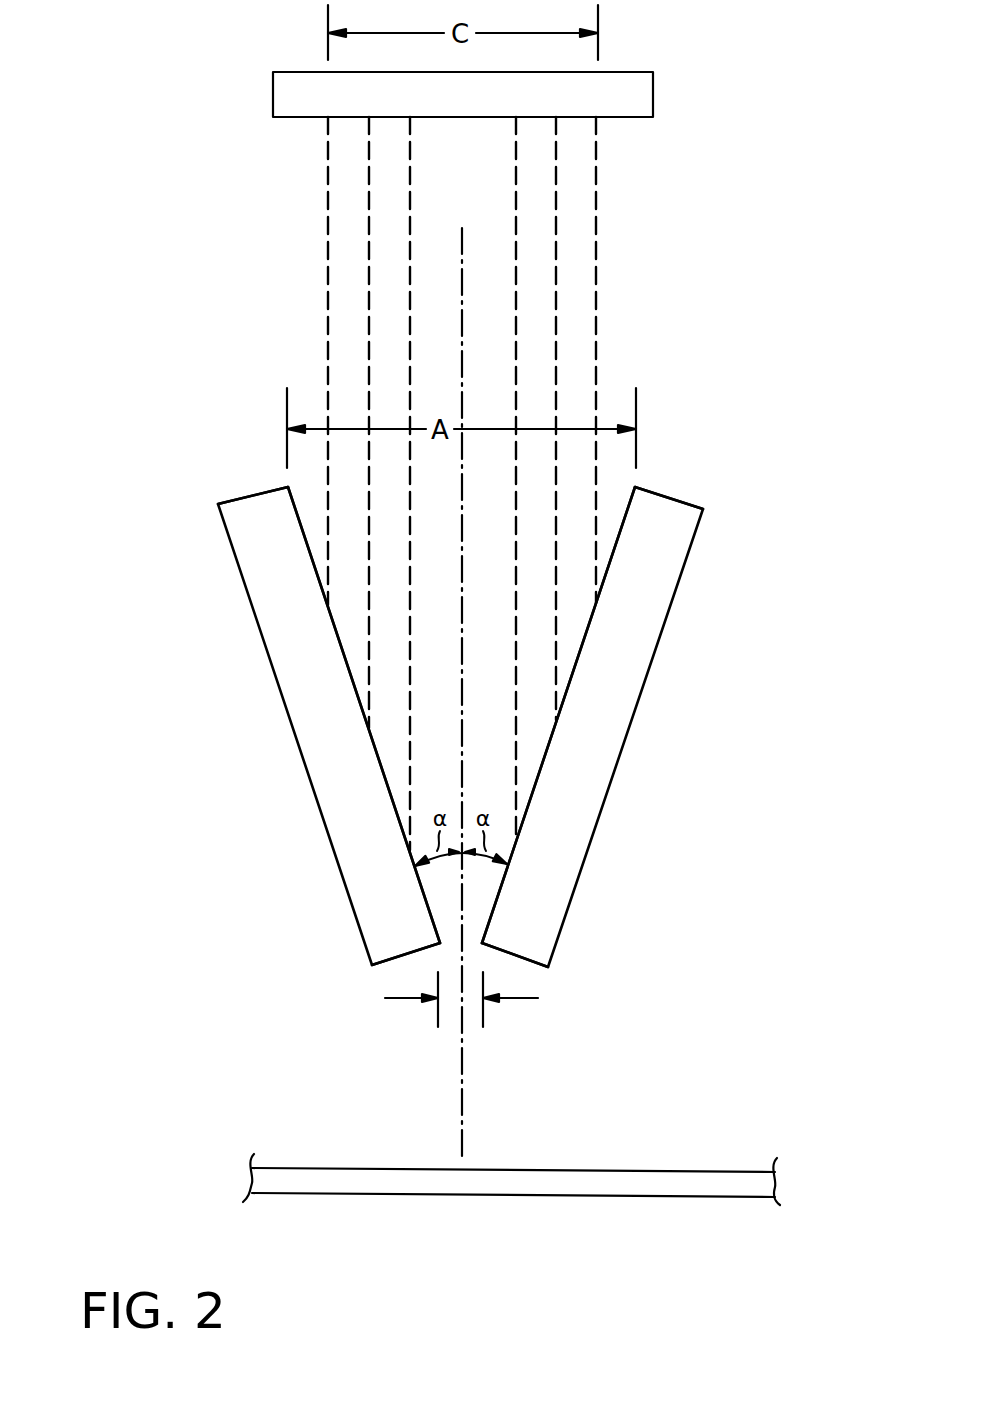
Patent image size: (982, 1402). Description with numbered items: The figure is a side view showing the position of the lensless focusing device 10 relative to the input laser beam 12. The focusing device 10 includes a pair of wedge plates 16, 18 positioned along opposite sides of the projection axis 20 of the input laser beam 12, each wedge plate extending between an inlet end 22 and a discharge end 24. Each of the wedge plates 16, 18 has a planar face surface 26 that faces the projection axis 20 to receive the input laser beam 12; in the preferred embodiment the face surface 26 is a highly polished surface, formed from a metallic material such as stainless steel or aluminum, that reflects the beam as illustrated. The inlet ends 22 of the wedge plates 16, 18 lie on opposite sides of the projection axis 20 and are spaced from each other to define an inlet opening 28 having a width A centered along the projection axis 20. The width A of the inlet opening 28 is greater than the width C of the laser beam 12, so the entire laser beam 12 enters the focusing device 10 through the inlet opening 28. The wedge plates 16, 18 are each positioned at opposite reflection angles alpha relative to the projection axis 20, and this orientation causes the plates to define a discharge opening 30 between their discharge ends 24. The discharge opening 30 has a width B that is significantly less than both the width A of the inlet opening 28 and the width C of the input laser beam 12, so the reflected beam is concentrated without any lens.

The focusing device 10 is at (644, 826).
The input laser beam 12 is at (634, 218).
The wedge plate 16 is at (690, 749).
The wedge plate 18 is at (240, 704).
The projection axis 20 is at (460, 247).
The inlet end 22 is at (250, 493).
The discharge end 24 is at (515, 953).
The face surface 26 is at (332, 629).
The inlet opening 28 is at (492, 469).
The discharge opening 30 is at (462, 922).